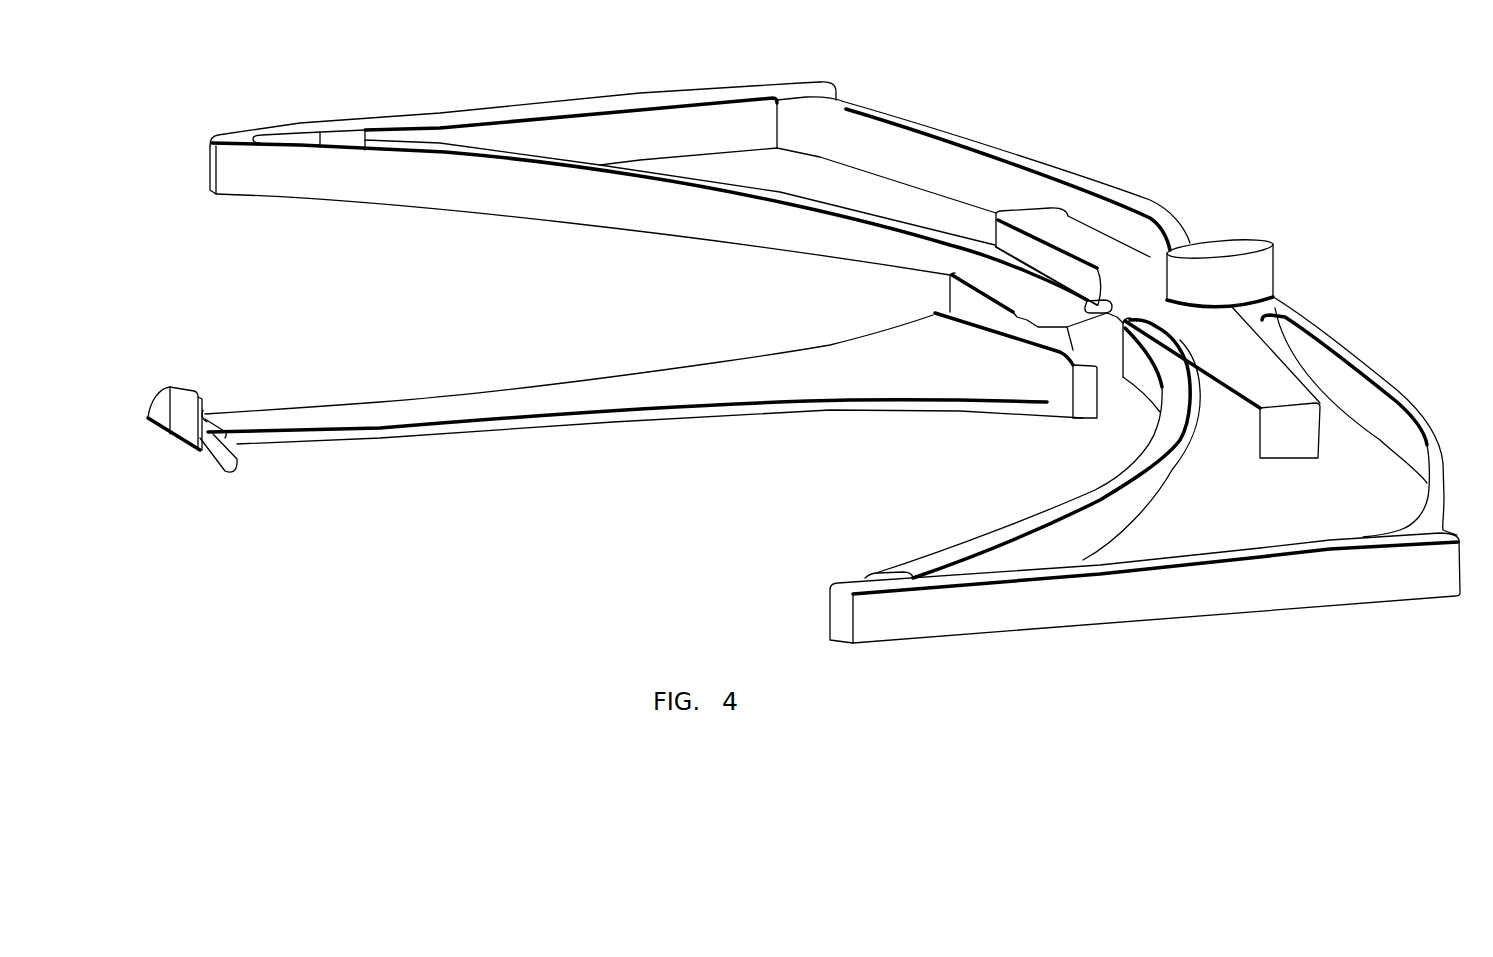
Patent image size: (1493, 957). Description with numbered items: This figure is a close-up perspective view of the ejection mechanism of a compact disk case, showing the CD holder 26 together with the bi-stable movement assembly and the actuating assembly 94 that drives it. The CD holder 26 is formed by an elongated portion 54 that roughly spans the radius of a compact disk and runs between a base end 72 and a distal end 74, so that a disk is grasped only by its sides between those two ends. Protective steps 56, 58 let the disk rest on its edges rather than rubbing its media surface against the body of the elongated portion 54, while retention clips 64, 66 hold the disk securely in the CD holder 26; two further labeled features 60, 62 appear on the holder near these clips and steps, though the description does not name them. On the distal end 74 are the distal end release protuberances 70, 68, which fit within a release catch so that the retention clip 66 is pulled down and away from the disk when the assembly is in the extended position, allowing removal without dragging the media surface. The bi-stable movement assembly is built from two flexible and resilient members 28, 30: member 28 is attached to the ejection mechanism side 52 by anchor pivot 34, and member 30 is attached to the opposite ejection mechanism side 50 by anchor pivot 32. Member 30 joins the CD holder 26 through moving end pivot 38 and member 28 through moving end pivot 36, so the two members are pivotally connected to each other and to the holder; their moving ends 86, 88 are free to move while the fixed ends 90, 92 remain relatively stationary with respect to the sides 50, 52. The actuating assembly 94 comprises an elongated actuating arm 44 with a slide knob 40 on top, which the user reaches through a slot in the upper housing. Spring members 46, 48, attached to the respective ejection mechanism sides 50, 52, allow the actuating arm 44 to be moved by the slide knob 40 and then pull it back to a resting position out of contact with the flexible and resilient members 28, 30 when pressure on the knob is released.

The CD holder 26 is at (683, 496).
The flexible and resilient member 28 is at (587, 200).
The flexible and resilient member 30 is at (1052, 517).
The anchor pivot 32 is at (867, 575).
The anchor pivot 34 is at (280, 143).
The moving end pivot 36 is at (1110, 290).
The moving end pivot 38 is at (1150, 310).
The slide knob 40 is at (1260, 275).
The elongated actuating arm 44 is at (1260, 367).
The spring member 46 is at (1433, 475).
The spring member 48 is at (873, 110).
The ejection mechanism side 50 is at (1183, 590).
The ejection mechanism side 52 is at (722, 95).
The elongated portion 54 is at (600, 388).
The protective step 56 is at (1050, 383).
The protective step 58 is at (230, 423).
The tab 60 is at (933, 315).
The inner wall end tip 62 is at (210, 414).
The retention clip 64 is at (1025, 322).
The retention clip 66 is at (198, 392).
The distal end release protuberance 68 is at (233, 465).
The distal end release protuberance 70 is at (160, 393).
The base end 72 is at (860, 285).
The distal end 74 is at (194, 470).
The moving end 86 is at (1121, 405).
The moving end 88 is at (1088, 280).
The fixed end 90 is at (880, 550).
The fixed end 92 is at (320, 160).
The actuating assembly 94 is at (1270, 215).